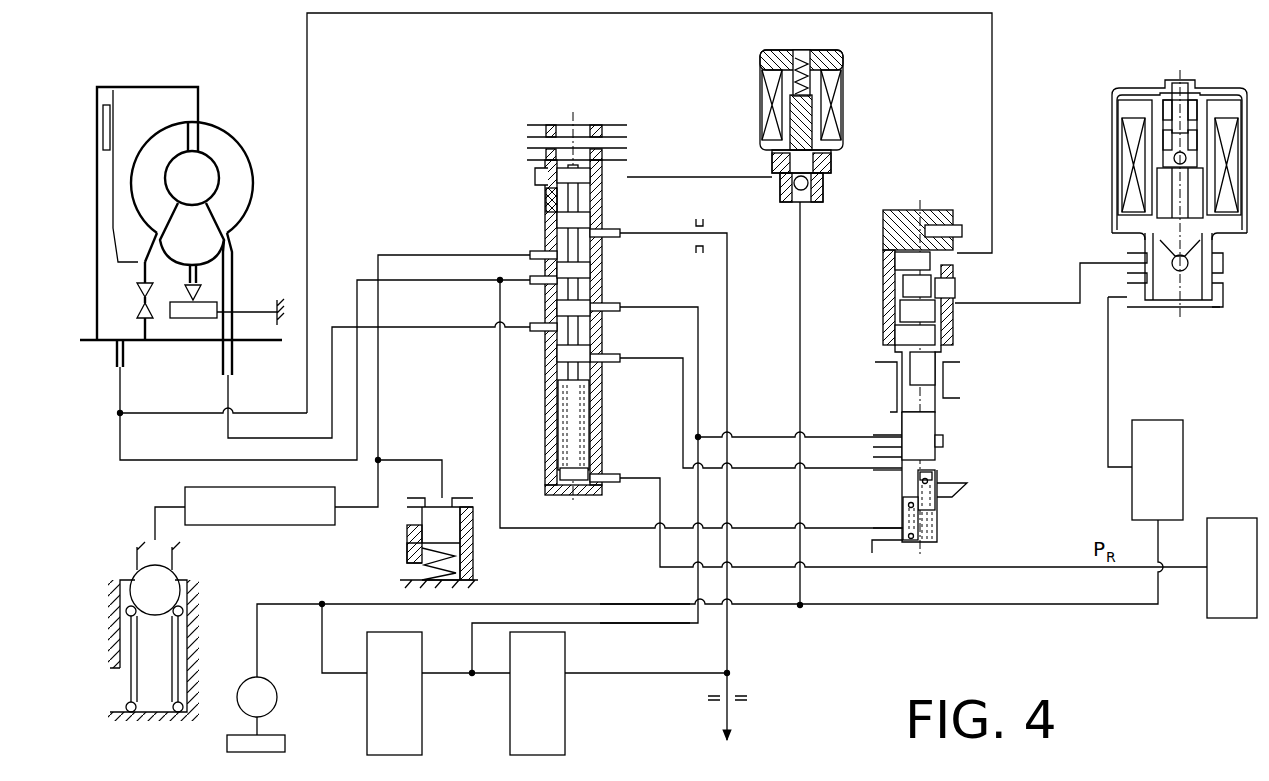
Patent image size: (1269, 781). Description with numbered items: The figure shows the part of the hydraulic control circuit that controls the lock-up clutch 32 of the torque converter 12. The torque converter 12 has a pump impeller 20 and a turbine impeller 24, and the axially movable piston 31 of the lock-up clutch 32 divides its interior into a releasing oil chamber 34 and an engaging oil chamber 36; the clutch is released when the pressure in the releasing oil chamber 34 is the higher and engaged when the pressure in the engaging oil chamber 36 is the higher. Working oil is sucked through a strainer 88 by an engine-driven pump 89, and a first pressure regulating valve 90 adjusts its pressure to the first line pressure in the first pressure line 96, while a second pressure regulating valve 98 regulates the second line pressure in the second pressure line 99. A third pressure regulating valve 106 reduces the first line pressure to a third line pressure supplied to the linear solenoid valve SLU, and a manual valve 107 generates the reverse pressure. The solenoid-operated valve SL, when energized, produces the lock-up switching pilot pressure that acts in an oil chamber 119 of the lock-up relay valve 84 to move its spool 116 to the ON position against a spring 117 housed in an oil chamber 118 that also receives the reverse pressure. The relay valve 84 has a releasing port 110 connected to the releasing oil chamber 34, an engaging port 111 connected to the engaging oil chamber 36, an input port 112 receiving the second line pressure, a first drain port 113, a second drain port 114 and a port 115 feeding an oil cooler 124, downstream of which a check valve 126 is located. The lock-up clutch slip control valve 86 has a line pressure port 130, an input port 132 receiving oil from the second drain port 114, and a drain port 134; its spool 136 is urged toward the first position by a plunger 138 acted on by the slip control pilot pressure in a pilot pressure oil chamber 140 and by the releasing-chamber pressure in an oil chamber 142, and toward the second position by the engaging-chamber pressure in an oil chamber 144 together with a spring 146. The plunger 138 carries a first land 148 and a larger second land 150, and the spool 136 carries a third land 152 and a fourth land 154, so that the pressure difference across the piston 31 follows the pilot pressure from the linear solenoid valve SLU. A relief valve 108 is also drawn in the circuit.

The torque converter 12 is at (236, 116).
The pump impeller 20 is at (230, 152).
The turbine impeller 24 is at (168, 181).
The piston 31 is at (122, 160).
The lock-up clutch 32 is at (106, 104).
The releasing oil chamber 34 is at (104, 338).
The engaging oil chamber 36 is at (163, 100).
The lock-up relay valve 84 is at (636, 122).
The lock-up clutch slip control valve 86 is at (947, 200).
The strainer 88 is at (272, 738).
The pump 89 is at (273, 688).
The first pressure regulating valve 90 is at (410, 695).
The first pressure line 96 is at (690, 603).
The second pressure regulating valve 98 is at (545, 695).
The second pressure line 99 is at (660, 623).
The third pressure regulating valve 106 is at (1135, 497).
The manual valve 107 is at (1237, 522).
The relief valve 108 is at (452, 490).
The releasing port 110 is at (535, 331).
The engaging port 111 is at (538, 284).
The input port 112 is at (614, 305).
The first drain port 113 is at (538, 260).
The second drain port 114 is at (614, 355).
The port 115 is at (612, 232).
The spool 116 is at (548, 215).
The spring 117 is at (605, 398).
The oil chamber 118 is at (550, 420).
The oil chamber 119 is at (537, 180).
The oil cooler 124 is at (243, 517).
The check valve 126 is at (118, 572).
The line pressure port 130 is at (882, 437).
The input port 132 is at (882, 470).
The drain port 134 is at (957, 492).
The spool 136 is at (935, 460).
The plunger 138 is at (930, 338).
The pilot pressure oil chamber 140 is at (950, 283).
The oil chamber 142 is at (892, 255).
The oil chamber 144 is at (940, 535).
The spring 146 is at (935, 478).
The first land 148 is at (900, 290).
The second land 150 is at (898, 340).
The third land 152 is at (930, 390).
The fourth land 154 is at (900, 520).
The solenoid-operated valve SL is at (853, 68).
The linear solenoid valve SLU is at (1145, 50).